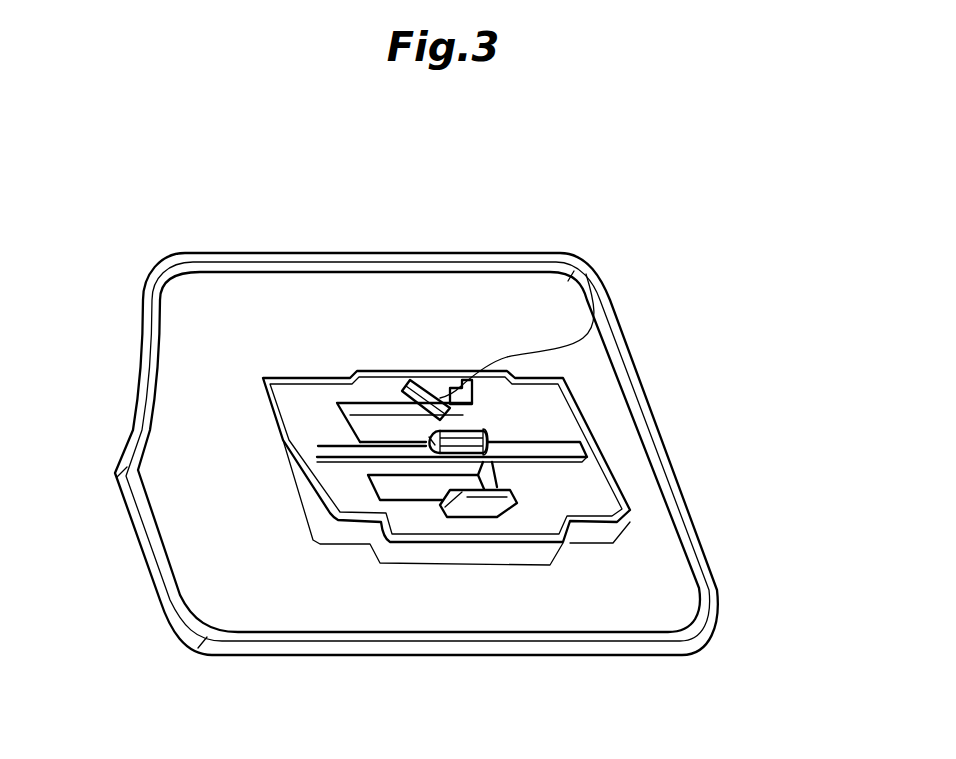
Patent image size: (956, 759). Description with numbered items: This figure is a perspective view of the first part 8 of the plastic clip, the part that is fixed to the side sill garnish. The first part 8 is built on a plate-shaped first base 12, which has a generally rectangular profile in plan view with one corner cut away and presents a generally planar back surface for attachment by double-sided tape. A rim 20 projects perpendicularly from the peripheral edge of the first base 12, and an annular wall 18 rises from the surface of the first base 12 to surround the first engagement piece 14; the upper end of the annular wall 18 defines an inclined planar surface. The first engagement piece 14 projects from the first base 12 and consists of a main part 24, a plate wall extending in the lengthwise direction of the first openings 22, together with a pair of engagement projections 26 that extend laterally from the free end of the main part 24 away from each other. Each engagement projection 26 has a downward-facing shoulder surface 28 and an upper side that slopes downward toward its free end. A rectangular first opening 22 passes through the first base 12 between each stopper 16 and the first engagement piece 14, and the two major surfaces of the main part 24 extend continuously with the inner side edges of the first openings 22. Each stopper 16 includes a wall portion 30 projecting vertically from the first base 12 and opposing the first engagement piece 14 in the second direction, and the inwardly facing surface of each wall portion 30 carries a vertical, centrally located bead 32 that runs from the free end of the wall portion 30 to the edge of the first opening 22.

The first part 8 is at (637, 236).
The first base 12 is at (627, 343).
The first engagement piece 14 is at (496, 431).
The stopper 16 is at (595, 363).
The annular wall 18 is at (633, 518).
The rim 20 is at (718, 598).
The first opening 22 is at (377, 491).
The main part 24 is at (426, 438).
The engagement projection 26 is at (440, 455).
The shoulder surface 28 is at (405, 424).
The wall portion 30 is at (403, 383).
The bead 32 is at (456, 386).